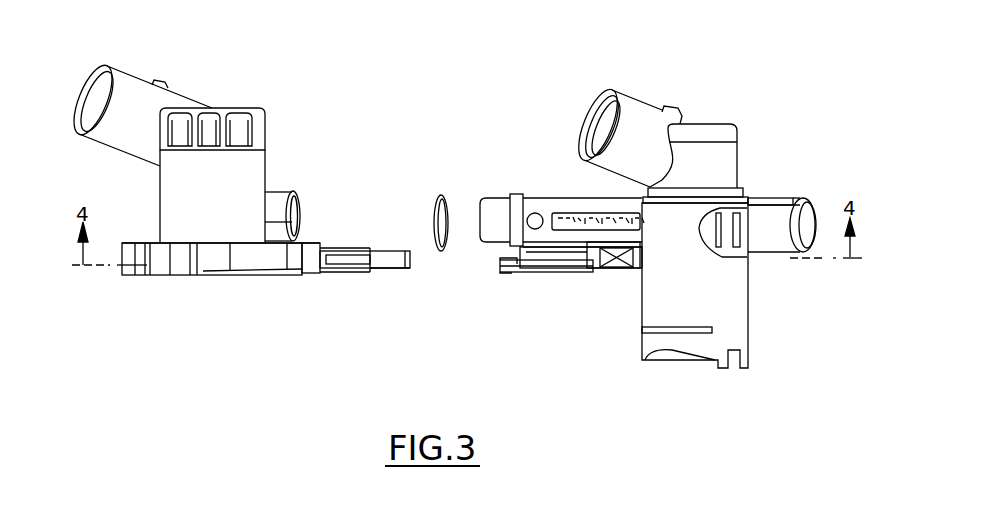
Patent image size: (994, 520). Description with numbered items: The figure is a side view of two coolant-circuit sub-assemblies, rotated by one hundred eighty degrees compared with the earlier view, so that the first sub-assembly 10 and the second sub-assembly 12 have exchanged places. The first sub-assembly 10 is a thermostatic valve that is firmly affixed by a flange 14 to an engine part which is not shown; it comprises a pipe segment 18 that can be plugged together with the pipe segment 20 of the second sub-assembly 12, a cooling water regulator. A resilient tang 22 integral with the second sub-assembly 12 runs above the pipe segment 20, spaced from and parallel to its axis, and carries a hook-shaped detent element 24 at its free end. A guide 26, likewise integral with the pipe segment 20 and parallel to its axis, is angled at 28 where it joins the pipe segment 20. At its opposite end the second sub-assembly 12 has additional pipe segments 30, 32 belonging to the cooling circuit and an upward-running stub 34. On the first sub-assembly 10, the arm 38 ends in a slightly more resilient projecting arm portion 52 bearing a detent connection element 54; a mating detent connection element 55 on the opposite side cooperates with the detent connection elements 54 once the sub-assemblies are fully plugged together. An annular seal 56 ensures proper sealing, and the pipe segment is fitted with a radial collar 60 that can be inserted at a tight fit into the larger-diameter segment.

The first sub-assembly 10 is at (209, 140).
The second sub-assembly 12 is at (686, 133).
The flange 14 is at (218, 258).
The pipe segment 18 is at (280, 201).
The pipe segment 20 is at (533, 207).
The resilient tang 22 is at (544, 318).
The hook-shaped detent element 24 is at (515, 262).
The guide 26 is at (556, 266).
The angled site of guide 28 is at (500, 262).
The additional pipe segment 30 is at (768, 198).
The additional pipe segment 32 is at (772, 238).
The upward-running stub 34 is at (737, 325).
The arm 38 is at (313, 252).
The projecting arm portion 52 is at (382, 257).
The detent connection element 54 is at (403, 272).
The mating detent connection element 55 is at (633, 265).
The annular seal 56 is at (442, 193).
The radial collar 60 is at (515, 195).